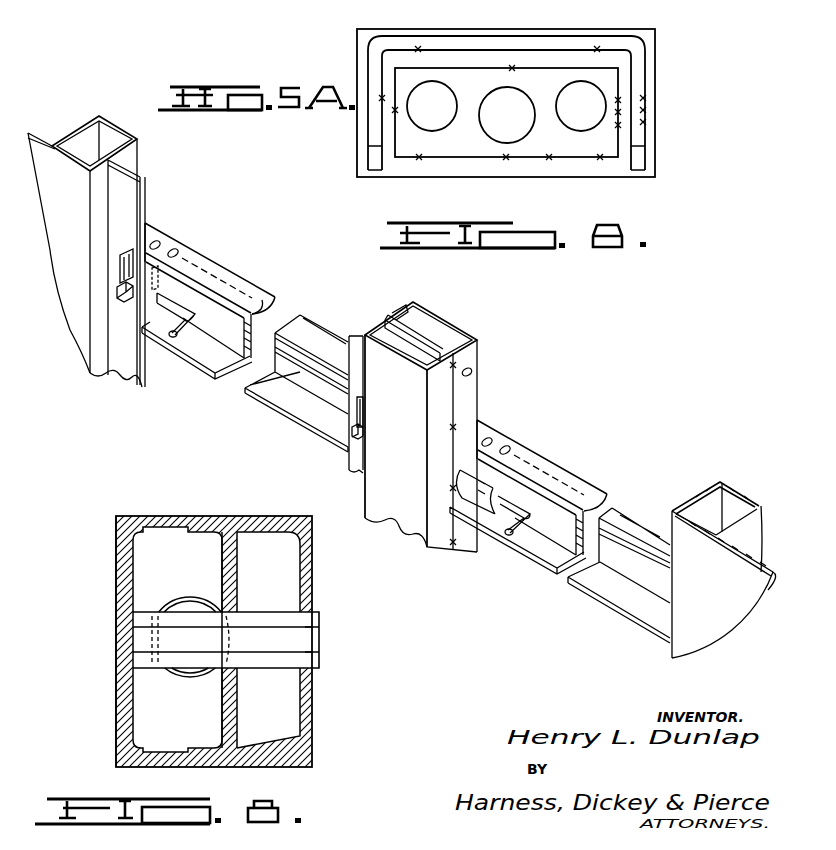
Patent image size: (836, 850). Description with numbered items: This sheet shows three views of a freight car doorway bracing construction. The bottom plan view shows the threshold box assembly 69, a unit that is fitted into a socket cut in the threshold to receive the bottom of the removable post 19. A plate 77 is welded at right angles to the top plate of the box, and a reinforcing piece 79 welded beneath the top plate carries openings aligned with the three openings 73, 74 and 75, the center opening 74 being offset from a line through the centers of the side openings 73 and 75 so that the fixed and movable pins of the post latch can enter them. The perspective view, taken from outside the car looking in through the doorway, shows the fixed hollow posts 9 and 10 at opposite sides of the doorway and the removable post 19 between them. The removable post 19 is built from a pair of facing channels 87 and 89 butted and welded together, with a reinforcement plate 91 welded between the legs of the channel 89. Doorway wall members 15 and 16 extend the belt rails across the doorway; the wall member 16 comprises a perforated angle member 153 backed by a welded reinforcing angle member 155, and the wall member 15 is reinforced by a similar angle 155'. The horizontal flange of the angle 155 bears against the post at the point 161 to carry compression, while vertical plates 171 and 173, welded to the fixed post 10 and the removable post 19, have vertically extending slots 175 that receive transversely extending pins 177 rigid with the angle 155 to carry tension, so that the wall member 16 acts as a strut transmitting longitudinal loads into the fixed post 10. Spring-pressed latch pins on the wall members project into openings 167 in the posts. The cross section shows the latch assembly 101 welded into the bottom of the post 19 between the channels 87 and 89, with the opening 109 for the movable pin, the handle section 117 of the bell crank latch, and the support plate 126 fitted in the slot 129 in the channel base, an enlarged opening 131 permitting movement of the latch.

In FIG. 5A, the threshold box assembly 69 is at (662, 105).
In FIG. 5A, the plate 77 is at (368, 62).
In FIG. 5A, the reinforcing piece 79 is at (475, 158).
In FIG. 5A, the opening 73 is at (438, 130).
In FIG. 5A, the center opening 74 is at (524, 130).
In FIG. 5A, the opening 75 is at (578, 130).
In FIG. 6, the fixed vertical hollow post 10 is at (84, 134).
In FIG. 6, the vertical plate 171 is at (130, 189).
In FIG. 6, the vertically extending slot 175 is at (118, 262).
In FIG. 6, the transversely extending pin 177 is at (116, 291).
In FIG. 6, the doorway wall member 16 is at (240, 272).
In FIG. 6, the angle member 153 is at (272, 300).
In FIG. 6, the reinforcing angle member 155 is at (179, 337).
In FIG. 6, the vertical plate 173 is at (351, 336).
In FIG. 6, the channel 87 is at (436, 322).
In FIG. 8, the channel 87 is at (118, 552).
In FIG. 6, the reinforcement plate 91 is at (400, 318).
In FIG. 8, the reinforcement plate 91 is at (238, 565).
In FIG. 6, the channel 89 is at (396, 441).
In FIG. 8, the channel 89 is at (302, 560).
In FIG. 6, the removable post 19 is at (480, 392).
In FIG. 6, the bearing point of angle flange 161 is at (455, 497).
In FIG. 6, the reinforcing angle 155' is at (516, 541).
In FIG. 6, the doorway wall member 15 is at (648, 508).
In FIG. 6, the fixed vertical hollow post 9 is at (722, 494).
In FIG. 8, the opening 167 is at (180, 516).
In FIG. 8, the latch assembly 101 is at (154, 610).
In FIG. 8, the opening 109 is at (188, 674).
In FIG. 8, the slot 129 is at (126, 622).
In FIG. 8, the enlarged opening 131 is at (126, 655).
In FIG. 8, the handle section 117 is at (319, 616).
In FIG. 8, the support plate 126 is at (319, 638).